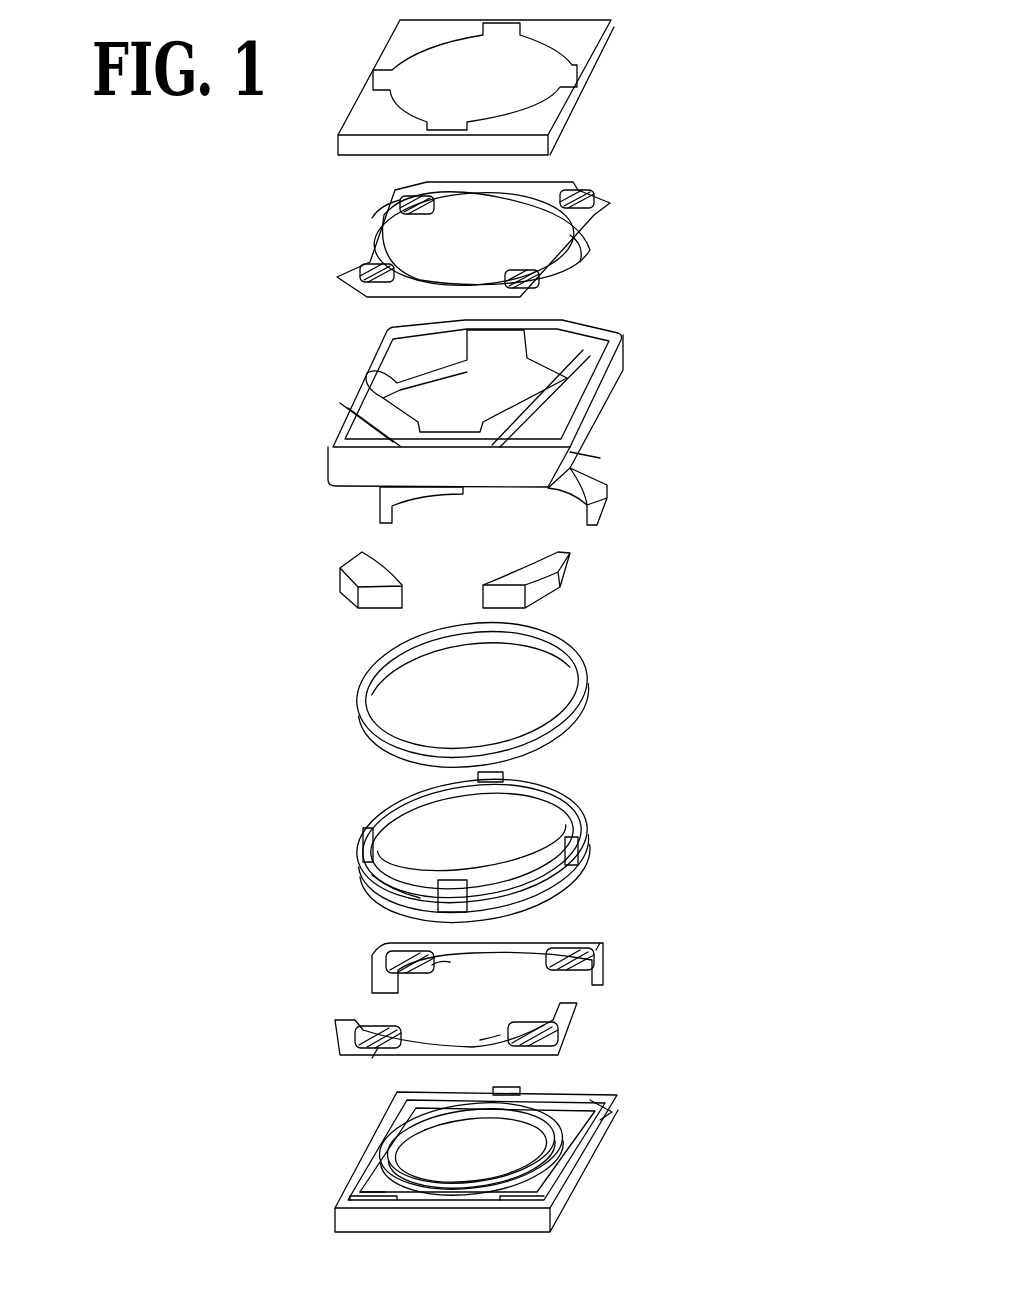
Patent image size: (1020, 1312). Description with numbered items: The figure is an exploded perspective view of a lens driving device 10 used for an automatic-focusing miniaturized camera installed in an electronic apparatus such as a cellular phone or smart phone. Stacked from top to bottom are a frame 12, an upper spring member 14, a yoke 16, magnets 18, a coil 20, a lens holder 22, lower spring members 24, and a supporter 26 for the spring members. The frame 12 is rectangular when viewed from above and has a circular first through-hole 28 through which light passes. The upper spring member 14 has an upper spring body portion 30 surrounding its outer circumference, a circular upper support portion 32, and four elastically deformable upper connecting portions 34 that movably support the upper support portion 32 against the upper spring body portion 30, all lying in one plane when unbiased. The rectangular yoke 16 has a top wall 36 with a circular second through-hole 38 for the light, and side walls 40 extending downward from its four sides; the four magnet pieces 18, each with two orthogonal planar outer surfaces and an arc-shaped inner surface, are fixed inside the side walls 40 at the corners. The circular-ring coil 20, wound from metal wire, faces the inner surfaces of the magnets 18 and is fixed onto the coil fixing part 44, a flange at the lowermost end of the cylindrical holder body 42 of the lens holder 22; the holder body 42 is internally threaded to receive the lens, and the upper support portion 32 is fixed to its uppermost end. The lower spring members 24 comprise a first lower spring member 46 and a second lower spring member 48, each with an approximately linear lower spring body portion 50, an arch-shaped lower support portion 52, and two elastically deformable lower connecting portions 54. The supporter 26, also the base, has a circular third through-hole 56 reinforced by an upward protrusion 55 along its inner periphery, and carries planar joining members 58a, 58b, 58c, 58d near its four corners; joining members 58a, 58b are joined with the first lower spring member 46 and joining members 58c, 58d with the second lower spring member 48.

The lens driving device 10 is at (738, 166).
The frame 12 is at (505, 87).
The upper spring member 14 is at (479, 227).
The yoke 16 is at (494, 411).
The magnets 18 is at (382, 515).
The coil 20 is at (588, 680).
The lens holder 22 is at (470, 850).
The lower spring members 24 is at (490, 997).
The supporter 26 is at (480, 1150).
The first through-hole 28 is at (428, 55).
The upper spring body portion 30 is at (372, 218).
The upper support portion 32 is at (580, 240).
The upper connecting portions 34 is at (398, 198).
The top wall 36 is at (578, 398).
The second through-hole 38 is at (348, 418).
The side walls 40 is at (598, 456).
The holder body 42 is at (372, 875).
The coil fixing part 44 is at (575, 870).
The first lower spring member 46 is at (348, 1053).
The second lower spring member 48 is at (606, 957).
The lower spring body portion 50 is at (600, 943).
The lower support portion 52 is at (432, 965).
The lower connecting portions 54 is at (385, 965).
The protrusion 55 is at (385, 1170).
The third through-hole 56 is at (565, 1160).
The joining member 58a is at (360, 1200).
The joining member 58b is at (555, 1212).
The joining member 58c is at (460, 1100).
The joining member 58d is at (612, 1112).